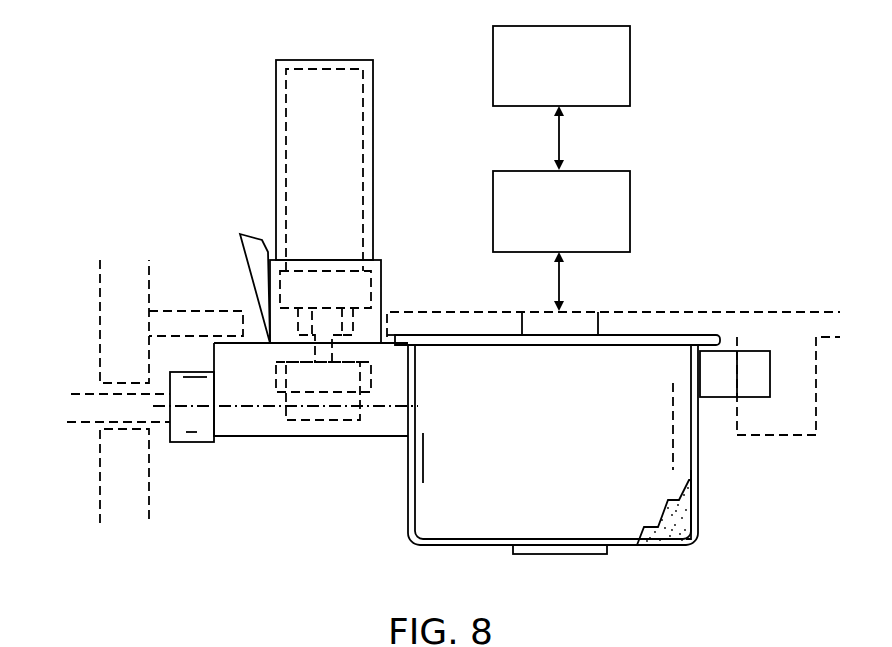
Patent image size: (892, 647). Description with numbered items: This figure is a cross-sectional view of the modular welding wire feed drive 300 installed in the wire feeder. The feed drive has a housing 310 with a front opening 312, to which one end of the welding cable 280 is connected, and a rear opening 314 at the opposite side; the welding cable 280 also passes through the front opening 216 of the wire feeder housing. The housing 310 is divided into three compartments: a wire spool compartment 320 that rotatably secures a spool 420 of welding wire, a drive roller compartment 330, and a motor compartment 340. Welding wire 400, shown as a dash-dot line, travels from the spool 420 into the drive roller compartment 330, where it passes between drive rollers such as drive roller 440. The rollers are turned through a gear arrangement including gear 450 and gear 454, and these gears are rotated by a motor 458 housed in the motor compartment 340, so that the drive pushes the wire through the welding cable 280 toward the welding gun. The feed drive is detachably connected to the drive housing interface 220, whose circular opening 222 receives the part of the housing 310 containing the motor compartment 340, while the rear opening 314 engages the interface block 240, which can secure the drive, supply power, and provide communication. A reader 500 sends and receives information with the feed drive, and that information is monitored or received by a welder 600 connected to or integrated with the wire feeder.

The motor 458 is at (310, 85).
The motor compartment 340 is at (285, 120).
The drive housing interface 220 is at (248, 313).
The welding wire 400 is at (200, 405).
The welding cable 280 is at (80, 393).
The front opening 216 is at (100, 430).
The front opening 312 is at (173, 431).
The drive roller compartment 330 is at (264, 430).
The gear 454 is at (342, 313).
The circular opening 222 is at (386, 309).
The gear 450 is at (366, 375).
The drive roller 440 is at (326, 413).
The housing 310 is at (408, 512).
The welding wire feed drive 300 is at (460, 555).
The spool of welding wire 420 is at (665, 543).
The wire spool compartment 320 is at (694, 533).
The rear opening 314 is at (764, 370).
The interface block 240 is at (793, 422).
The welder 600 is at (631, 53).
The reader 500 is at (631, 200).